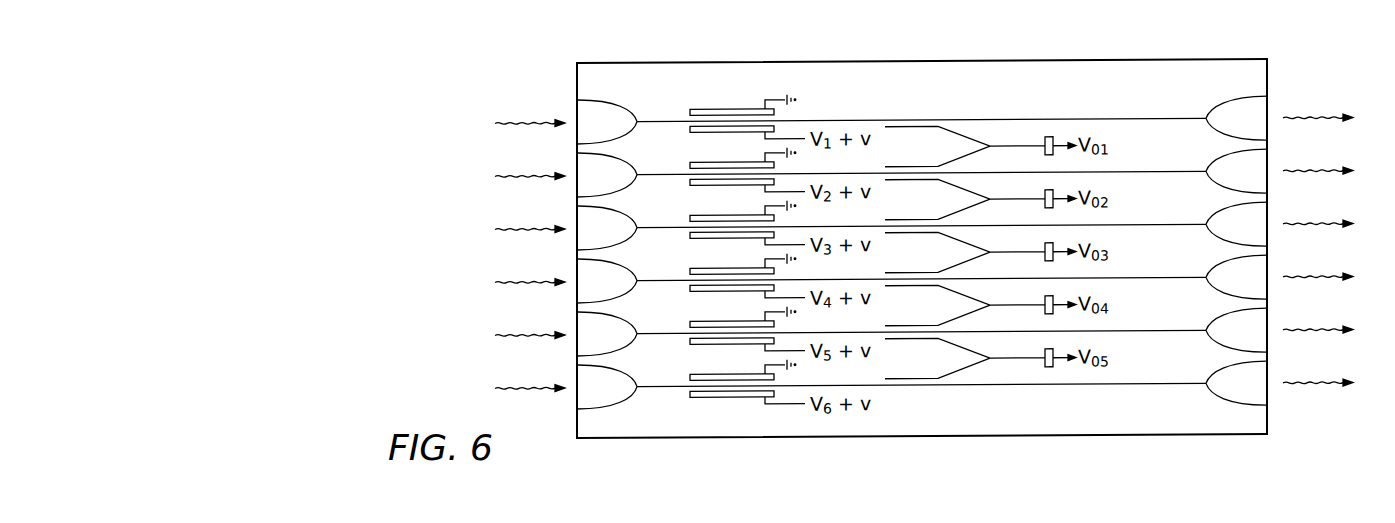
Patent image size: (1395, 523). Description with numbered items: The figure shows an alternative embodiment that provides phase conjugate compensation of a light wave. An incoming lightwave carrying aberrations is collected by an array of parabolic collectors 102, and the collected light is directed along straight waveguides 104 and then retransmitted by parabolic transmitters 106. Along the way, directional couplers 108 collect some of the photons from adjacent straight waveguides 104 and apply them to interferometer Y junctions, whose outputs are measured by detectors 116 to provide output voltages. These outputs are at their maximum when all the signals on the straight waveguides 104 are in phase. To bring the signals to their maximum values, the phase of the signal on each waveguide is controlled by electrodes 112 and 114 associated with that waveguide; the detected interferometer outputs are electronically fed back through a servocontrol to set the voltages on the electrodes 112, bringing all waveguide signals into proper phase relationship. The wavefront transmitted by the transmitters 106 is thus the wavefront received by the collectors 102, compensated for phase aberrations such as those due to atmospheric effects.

The parabolic collector 102 is at (610, 102).
The straight waveguide 104 is at (1105, 121).
The parabolic transmitter 106 is at (1248, 101).
The directional coupler 108 is at (961, 146).
The electrode 112 is at (718, 134).
The electrode 114 is at (705, 110).
The detector 116 is at (1047, 139).